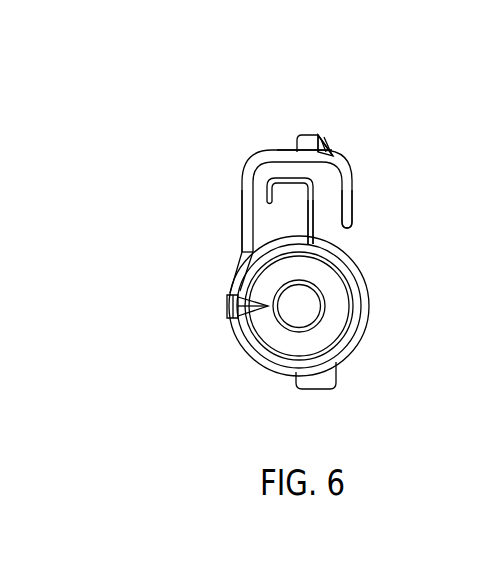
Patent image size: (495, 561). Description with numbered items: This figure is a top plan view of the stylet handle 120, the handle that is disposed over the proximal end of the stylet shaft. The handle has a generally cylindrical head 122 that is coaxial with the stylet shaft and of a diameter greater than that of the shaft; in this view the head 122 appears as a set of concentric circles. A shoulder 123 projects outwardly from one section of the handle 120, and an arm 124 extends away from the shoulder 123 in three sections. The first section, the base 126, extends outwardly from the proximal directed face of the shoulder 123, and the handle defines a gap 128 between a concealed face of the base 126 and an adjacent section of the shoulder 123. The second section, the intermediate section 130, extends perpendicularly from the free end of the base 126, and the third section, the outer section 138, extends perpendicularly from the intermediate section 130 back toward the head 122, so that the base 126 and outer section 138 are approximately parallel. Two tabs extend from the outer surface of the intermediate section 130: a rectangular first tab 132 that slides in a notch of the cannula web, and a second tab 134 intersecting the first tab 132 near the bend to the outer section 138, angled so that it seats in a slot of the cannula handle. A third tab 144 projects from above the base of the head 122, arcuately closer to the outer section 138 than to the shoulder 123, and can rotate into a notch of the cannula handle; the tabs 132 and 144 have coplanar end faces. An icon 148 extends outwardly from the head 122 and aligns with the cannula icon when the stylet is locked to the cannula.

The stylet handle 120 is at (390, 108).
The handle head 122 is at (273, 338).
The shoulder 123 is at (295, 222).
The arm 124 is at (216, 156).
The arm base 126 is at (243, 192).
The gap 128 is at (262, 204).
The intermediate section 130 is at (278, 146).
The first tab 132 is at (306, 134).
The second tab 134 is at (335, 146).
The outer section 138 is at (352, 200).
The third tab 144 is at (316, 390).
The icon 148 is at (226, 303).